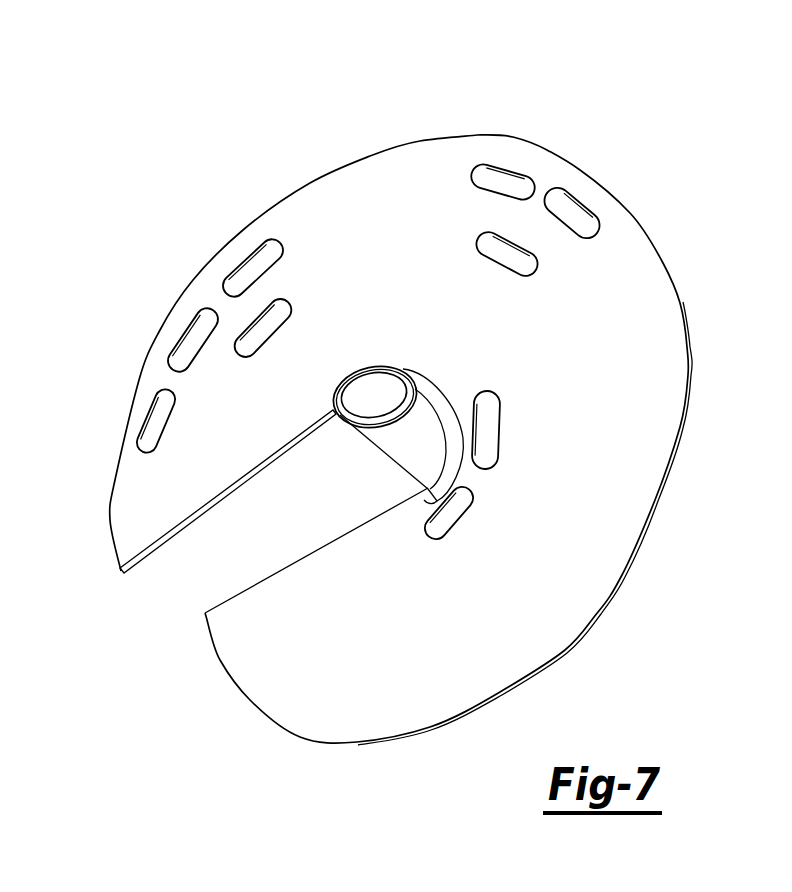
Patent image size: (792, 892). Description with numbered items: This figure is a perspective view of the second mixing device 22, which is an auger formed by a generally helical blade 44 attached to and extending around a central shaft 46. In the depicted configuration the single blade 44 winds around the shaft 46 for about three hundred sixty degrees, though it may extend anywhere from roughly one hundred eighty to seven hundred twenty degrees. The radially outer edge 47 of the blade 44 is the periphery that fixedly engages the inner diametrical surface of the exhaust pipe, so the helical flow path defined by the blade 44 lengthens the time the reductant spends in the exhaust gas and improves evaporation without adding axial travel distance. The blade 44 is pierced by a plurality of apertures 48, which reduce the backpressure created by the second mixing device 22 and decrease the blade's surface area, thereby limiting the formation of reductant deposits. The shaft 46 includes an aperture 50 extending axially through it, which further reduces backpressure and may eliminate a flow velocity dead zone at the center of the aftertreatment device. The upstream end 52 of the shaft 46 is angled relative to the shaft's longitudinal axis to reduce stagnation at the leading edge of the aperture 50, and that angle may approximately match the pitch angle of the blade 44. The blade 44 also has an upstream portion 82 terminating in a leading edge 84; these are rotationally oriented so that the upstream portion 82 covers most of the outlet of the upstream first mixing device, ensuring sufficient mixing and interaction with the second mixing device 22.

The second mixing device 22 is at (218, 142).
The helical blade 44 is at (360, 188).
The central shaft 46 is at (402, 445).
The radially outer edge 47 is at (689, 365).
The apertures 48 is at (583, 207).
The aperture 50 is at (382, 387).
The upstream end 52 is at (363, 370).
The upstream portion 82 is at (130, 498).
The leading edge 84 is at (158, 547).